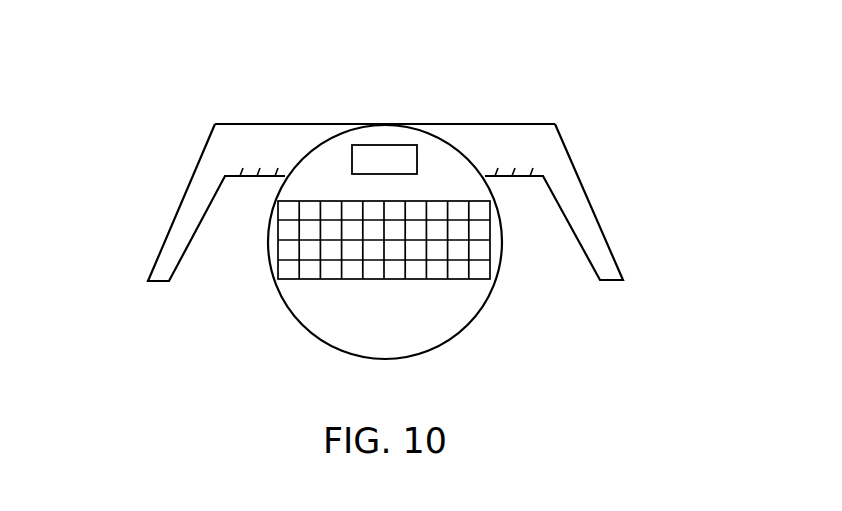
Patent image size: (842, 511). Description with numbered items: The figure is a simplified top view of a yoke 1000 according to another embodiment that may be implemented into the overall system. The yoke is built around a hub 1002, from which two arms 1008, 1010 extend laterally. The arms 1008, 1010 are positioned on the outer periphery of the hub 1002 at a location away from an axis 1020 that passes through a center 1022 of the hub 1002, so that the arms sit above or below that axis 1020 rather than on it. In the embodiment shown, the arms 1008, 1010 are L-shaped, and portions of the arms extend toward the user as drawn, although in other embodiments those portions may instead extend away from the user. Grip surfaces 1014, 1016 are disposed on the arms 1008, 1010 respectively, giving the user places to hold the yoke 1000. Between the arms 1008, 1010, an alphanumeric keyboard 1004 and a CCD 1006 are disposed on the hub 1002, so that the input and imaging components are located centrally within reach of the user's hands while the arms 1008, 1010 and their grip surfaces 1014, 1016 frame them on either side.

The vehicle system 1000 is at (473, 105).
The hub 1002 is at (428, 352).
The alphanumeric keyboard 1004 is at (460, 281).
The CCD 1006 is at (383, 145).
The arm 1008 is at (197, 165).
The arm 1010 is at (560, 141).
The grip surface 1014 is at (243, 177).
The grip surface 1016 is at (520, 177).
The axis 1020 is at (126, 240).
The center 1022 is at (385, 240).